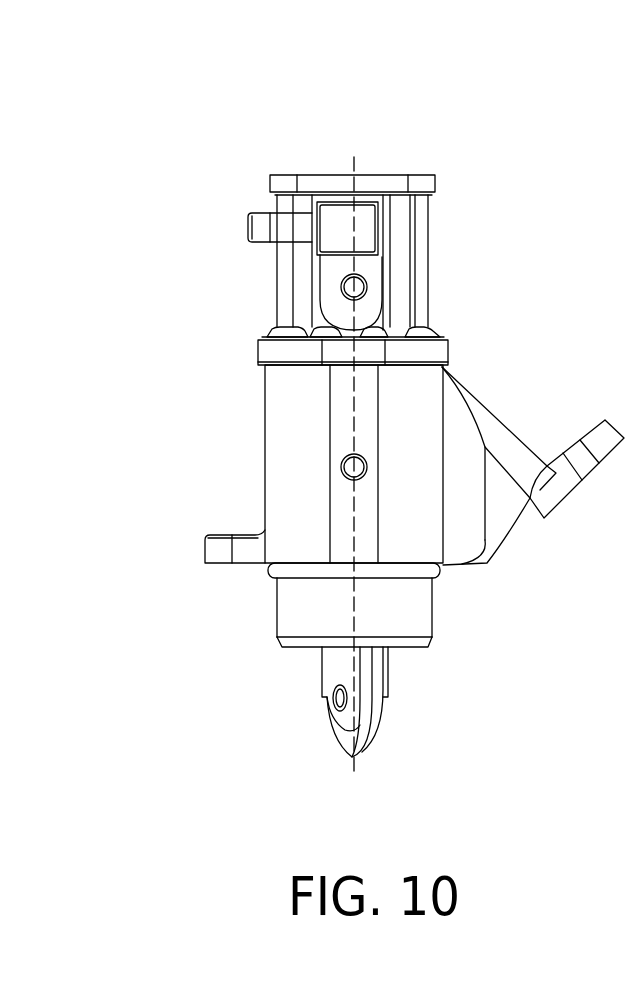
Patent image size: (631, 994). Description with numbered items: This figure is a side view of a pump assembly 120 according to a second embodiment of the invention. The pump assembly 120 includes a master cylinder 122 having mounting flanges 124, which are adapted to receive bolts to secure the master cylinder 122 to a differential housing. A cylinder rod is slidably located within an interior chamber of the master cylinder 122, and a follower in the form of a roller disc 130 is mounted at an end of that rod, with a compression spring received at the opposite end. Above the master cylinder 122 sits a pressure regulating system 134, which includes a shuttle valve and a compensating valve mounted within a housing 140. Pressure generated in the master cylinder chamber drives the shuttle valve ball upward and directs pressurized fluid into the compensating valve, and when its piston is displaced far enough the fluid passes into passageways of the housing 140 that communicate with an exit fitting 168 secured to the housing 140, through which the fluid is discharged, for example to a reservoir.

The pump assembly 120 is at (364, 429).
The master cylinder 122 is at (295, 413).
The mounting flanges 124 is at (219, 555).
The roller disc 130 is at (350, 747).
The pressure regulating system 134 is at (445, 275).
The housing 140 is at (285, 288).
The exit fitting 168 is at (337, 222).